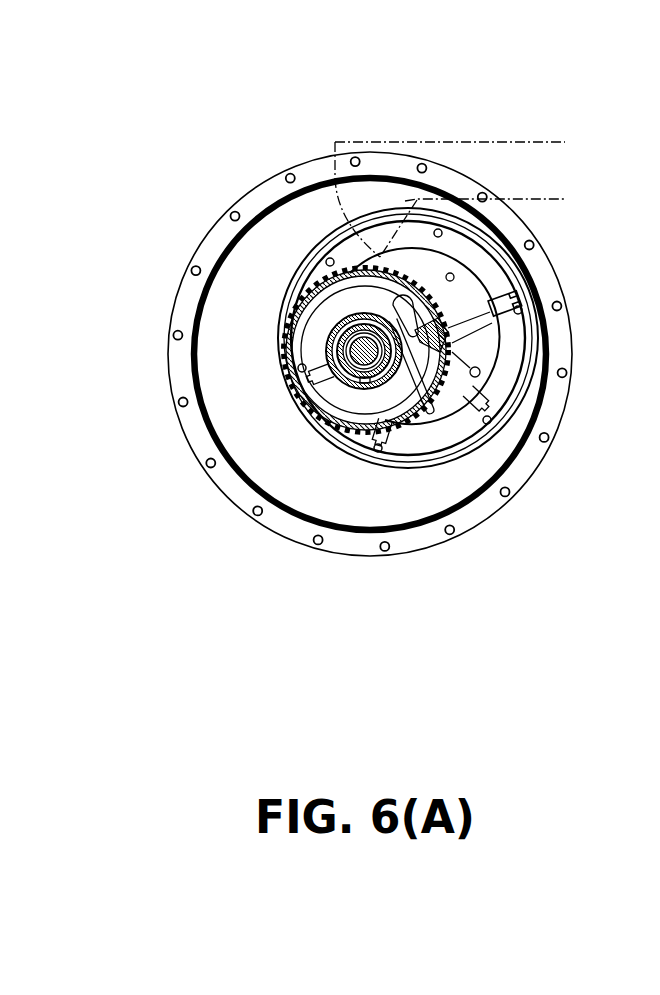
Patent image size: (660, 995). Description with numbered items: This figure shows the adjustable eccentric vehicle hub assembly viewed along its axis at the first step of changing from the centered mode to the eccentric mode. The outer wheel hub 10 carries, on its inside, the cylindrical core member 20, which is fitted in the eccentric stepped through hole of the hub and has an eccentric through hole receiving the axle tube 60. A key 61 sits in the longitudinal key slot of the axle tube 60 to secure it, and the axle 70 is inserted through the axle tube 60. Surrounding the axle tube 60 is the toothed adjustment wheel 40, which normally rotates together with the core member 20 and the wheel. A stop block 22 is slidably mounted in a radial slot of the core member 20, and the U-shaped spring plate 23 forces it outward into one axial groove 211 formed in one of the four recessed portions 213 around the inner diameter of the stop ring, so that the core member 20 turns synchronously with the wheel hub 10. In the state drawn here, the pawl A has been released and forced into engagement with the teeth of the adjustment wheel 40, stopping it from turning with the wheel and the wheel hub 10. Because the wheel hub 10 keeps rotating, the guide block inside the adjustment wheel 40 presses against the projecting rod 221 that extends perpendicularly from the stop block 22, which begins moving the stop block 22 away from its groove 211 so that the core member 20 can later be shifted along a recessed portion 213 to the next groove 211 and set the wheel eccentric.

The wheel hub 10 is at (270, 188).
The core member 20 is at (345, 392).
The axial groove 211 is at (468, 328).
The recessed portion 213 is at (490, 290).
The adjustment wheel 40 is at (332, 424).
The axle tube 60 is at (325, 338).
The key 61 is at (362, 392).
The axle 70 is at (352, 318).
The stop block 22 is at (455, 335).
The projecting rod 221 is at (450, 353).
The spring plate 23 is at (407, 427).
The pawl A is at (514, 155).